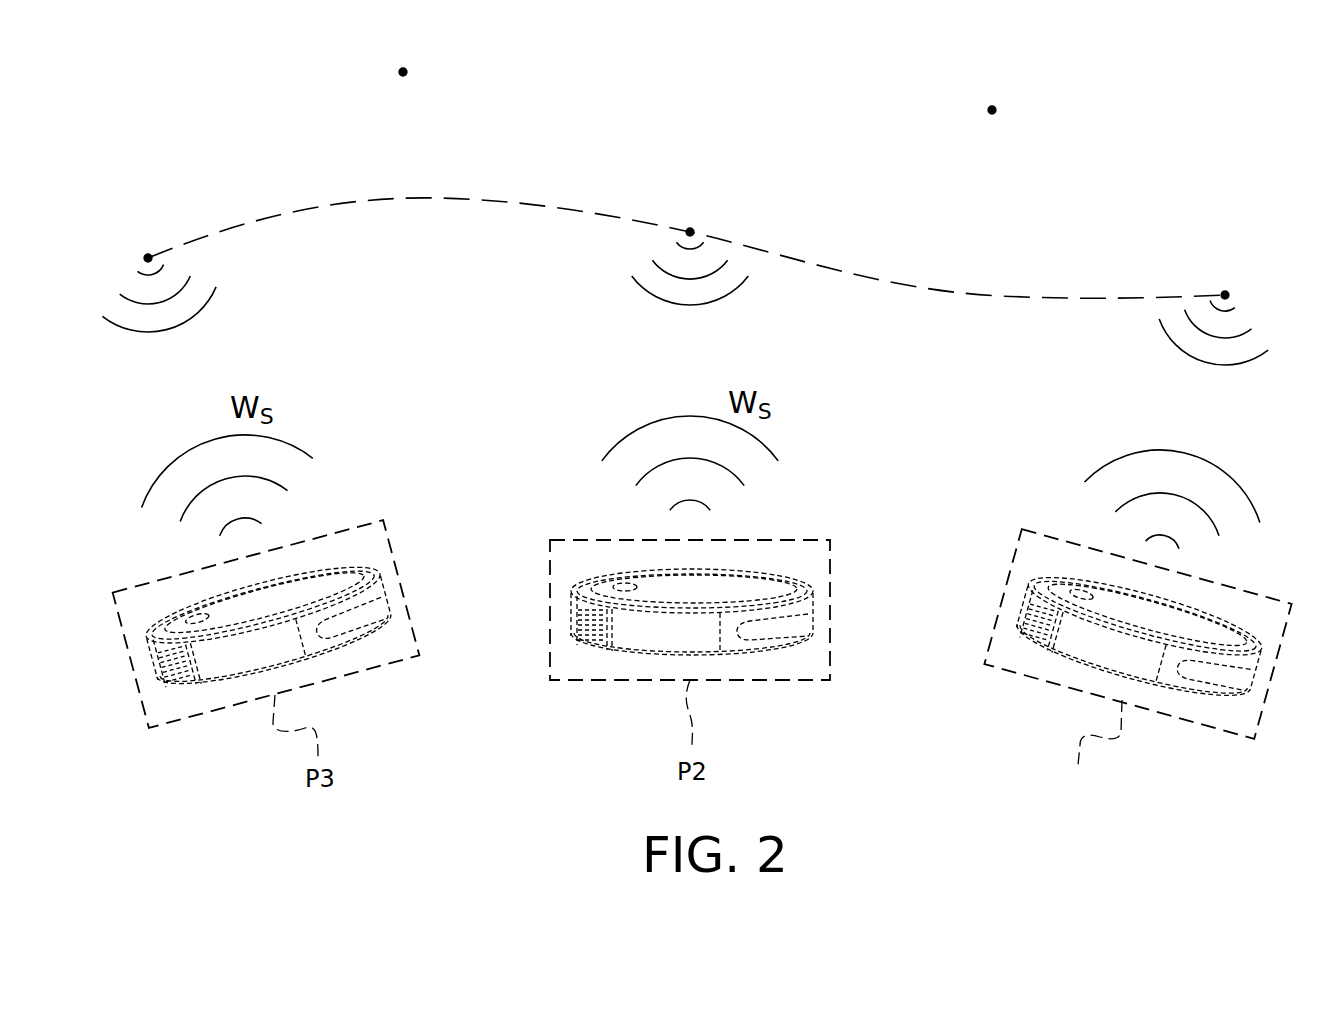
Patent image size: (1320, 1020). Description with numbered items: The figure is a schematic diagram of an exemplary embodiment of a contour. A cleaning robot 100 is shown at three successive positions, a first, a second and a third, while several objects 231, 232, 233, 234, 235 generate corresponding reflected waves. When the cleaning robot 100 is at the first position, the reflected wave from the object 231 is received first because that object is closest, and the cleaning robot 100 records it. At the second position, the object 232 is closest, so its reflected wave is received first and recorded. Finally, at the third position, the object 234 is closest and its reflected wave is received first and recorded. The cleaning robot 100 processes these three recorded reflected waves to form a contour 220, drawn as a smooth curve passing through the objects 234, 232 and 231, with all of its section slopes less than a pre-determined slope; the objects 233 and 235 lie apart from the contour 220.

The cleaning robot 100 is at (1040, 582).
The contour 220 is at (930, 292).
The object 231 is at (1225, 295).
The object 232 is at (690, 232).
The object 233 is at (992, 110).
The object 234 is at (148, 258).
The object 235 is at (403, 72).